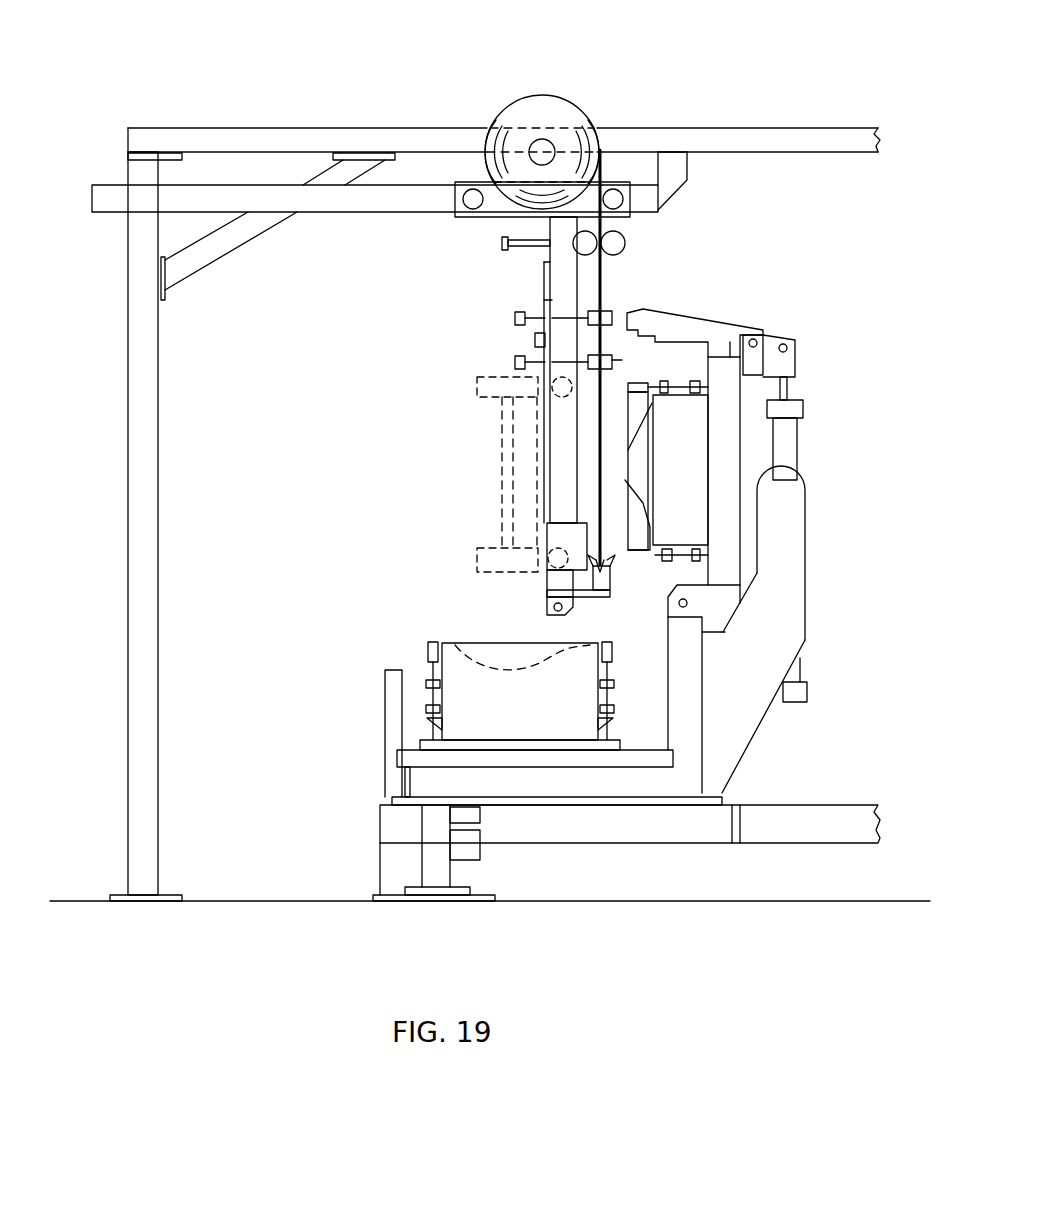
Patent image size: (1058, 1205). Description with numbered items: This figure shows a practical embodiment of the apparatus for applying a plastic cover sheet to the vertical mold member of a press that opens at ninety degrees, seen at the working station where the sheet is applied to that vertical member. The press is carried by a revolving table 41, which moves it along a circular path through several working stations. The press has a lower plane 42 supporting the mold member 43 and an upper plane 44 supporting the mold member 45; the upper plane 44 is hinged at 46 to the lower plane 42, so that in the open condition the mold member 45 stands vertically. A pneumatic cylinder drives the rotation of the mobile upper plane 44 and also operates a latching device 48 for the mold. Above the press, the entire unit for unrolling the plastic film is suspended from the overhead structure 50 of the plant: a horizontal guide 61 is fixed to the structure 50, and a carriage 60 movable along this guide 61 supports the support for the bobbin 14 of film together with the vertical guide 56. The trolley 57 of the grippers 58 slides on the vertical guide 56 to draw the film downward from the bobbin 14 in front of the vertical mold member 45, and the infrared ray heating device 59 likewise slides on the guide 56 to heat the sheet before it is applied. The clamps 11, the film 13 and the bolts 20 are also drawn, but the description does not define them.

The clamp 11 is at (640, 383).
The tape 13 is at (605, 275).
The bobbin 14 is at (540, 110).
The clamp bolt 20 is at (680, 385).
The revolving table 41 is at (660, 830).
The lower plane 42 is at (548, 785).
The mold member 43 is at (457, 665).
The upper plane 44 is at (735, 395).
The mold member 45 is at (695, 450).
The hinge 46 is at (688, 603).
The latching device 48 is at (705, 320).
The structure 50 is at (265, 143).
The vertical guide 56 is at (558, 423).
The trolley 57 is at (553, 532).
The grippers 58 is at (607, 585).
The infrared ray heating device 59 is at (528, 455).
The carriage 60 is at (492, 205).
The horizontal guide 61 is at (350, 205).